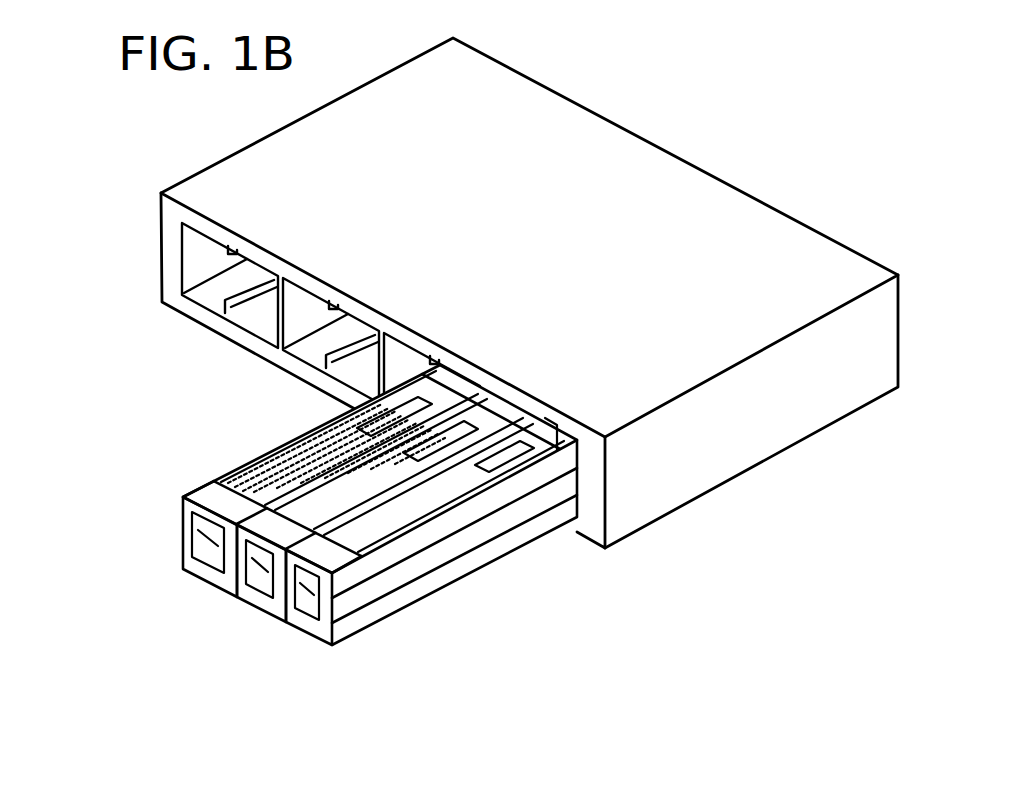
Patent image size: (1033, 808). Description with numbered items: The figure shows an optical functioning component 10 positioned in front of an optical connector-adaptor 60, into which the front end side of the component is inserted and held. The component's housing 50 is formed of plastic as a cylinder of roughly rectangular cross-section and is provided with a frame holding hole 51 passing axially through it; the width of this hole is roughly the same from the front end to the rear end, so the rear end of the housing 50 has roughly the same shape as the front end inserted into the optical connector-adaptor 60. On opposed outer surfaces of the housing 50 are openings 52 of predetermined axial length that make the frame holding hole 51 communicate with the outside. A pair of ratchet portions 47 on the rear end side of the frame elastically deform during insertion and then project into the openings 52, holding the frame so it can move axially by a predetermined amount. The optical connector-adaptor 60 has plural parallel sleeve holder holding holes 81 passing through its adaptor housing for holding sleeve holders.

The optical functioning component 10 is at (314, 541).
The ratchet portions 47 is at (557, 450).
The housing 50 is at (410, 570).
The frame holding hole 51 is at (286, 602).
The openings 52 is at (510, 458).
The optical connector-adaptor 60 is at (672, 180).
The sleeve holder holding holes 81 is at (203, 266).